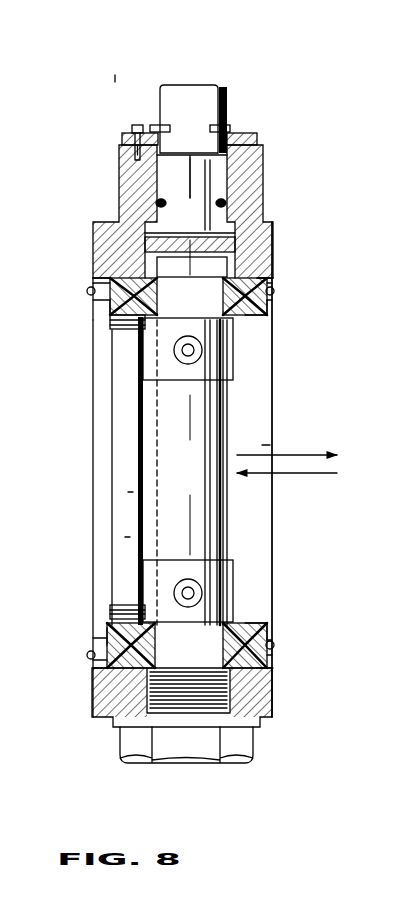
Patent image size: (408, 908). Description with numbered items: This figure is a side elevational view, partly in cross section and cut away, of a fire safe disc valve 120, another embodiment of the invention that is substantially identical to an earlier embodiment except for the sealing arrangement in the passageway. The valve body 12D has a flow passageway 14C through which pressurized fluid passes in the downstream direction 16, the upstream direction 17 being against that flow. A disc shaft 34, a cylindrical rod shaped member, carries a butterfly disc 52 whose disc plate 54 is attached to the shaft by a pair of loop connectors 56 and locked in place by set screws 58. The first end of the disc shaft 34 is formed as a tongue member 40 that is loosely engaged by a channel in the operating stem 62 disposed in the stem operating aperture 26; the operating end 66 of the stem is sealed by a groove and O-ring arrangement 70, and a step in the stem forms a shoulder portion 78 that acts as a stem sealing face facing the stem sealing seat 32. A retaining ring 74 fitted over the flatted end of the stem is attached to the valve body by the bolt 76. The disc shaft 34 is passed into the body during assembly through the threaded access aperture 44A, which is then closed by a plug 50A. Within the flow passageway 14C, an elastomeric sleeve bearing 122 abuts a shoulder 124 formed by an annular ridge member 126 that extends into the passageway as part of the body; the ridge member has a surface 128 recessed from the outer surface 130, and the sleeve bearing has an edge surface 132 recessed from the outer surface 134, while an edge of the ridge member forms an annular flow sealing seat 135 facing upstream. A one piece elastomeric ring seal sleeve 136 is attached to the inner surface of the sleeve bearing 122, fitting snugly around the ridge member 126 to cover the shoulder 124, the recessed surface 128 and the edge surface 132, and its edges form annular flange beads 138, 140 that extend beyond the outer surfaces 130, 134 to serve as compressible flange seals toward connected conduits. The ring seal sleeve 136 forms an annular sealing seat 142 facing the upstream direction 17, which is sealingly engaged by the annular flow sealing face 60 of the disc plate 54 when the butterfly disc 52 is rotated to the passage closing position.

The fire safe disc valve 120 is at (115, 80).
The operating stem 62 is at (178, 85).
The operating end 66 is at (200, 92).
The shoulder portion 78 is at (222, 128).
The bolt 76 is at (138, 125).
The retaining ring 74 is at (243, 135).
The valve body 12D is at (270, 147).
The groove and O-ring arrangement 70 is at (242, 196).
The stem sealing seat 32 is at (152, 228).
The stem operating aperture 26 is at (257, 238).
The outer surface 134 is at (262, 245).
The tongue member 40 is at (230, 265).
The shoulder 124 is at (128, 283).
The outer surface 130 is at (93, 263).
The annular flange bead 138 is at (87, 289).
The surface 128 is at (100, 293).
The annular ridge member 126 is at (105, 302).
The annular flow sealing seat 135 is at (110, 329).
The annular sealing seat 142 is at (138, 325).
The elastomeric sleeve bearing 122 is at (283, 278).
The annular flange bead 140 is at (274, 290).
The edge surface 132 is at (275, 296).
The elastomeric ring seal sleeve 136 is at (263, 316).
The flow passageway 14C is at (258, 395).
The annular flow sealing face 60 is at (125, 518).
The butterfly disc 52 is at (127, 420).
The disc plate 54 is at (118, 438).
The disc shaft 34 is at (187, 430).
The loop connectors 56 is at (233, 357).
The set screws 58 is at (186, 364).
The upstream direction 17 is at (286, 453).
The downstream direction 16 is at (315, 473).
The threaded access aperture 44A is at (117, 722).
The plug 50A is at (240, 748).